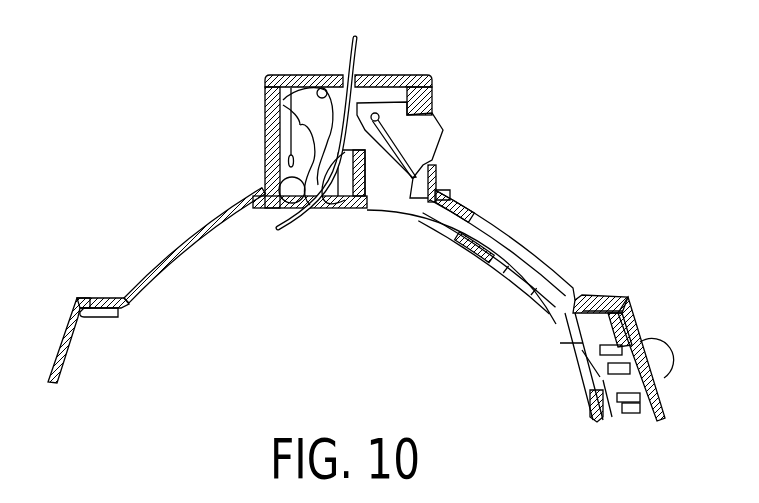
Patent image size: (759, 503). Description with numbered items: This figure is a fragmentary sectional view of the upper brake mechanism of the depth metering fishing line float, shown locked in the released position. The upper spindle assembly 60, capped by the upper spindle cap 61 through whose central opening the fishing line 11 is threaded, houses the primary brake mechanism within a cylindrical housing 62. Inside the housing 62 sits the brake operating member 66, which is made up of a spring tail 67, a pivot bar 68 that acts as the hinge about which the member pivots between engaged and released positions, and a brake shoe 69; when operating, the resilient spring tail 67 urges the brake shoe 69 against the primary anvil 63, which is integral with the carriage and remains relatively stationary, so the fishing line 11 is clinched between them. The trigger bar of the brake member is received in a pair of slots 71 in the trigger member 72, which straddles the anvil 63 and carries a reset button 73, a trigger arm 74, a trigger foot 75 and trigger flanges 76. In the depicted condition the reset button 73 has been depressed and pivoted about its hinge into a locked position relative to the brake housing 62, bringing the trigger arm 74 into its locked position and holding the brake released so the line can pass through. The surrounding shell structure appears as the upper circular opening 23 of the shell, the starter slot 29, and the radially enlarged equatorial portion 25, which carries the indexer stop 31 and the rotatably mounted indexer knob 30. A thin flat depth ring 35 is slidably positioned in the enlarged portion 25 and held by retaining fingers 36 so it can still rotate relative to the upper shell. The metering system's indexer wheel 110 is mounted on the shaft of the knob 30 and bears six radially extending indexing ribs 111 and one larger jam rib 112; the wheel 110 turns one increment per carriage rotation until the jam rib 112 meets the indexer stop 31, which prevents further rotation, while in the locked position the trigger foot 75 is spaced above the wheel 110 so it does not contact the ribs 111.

The upper spindle assembly 60 is at (204, 82).
The cylindrical housing 62 is at (264, 84).
The fishing line 11 is at (346, 50).
The trigger member 72 is at (363, 76).
The upper spindle cap 61 is at (334, 106).
The reset button 73 is at (443, 130).
The slots 71 is at (282, 90).
The brake operating member 66 is at (300, 128).
The spring tail 67 is at (298, 140).
The pivot bar 68 is at (290, 190).
The upper circular opening 23 is at (270, 224).
The brake shoe 69 is at (320, 215).
The primary anvil 63 is at (365, 180).
The starter slot 29 is at (473, 212).
The trigger arm 74 is at (514, 259).
The depth ring 35 is at (112, 318).
The indexer stop 31 is at (641, 312).
The indexer wheel 110 is at (658, 340).
The indexer knob 30 is at (667, 362).
The equatorial portion 25 is at (62, 328).
The trigger foot 75 is at (583, 324).
The trigger flanges 76 is at (578, 355).
The indexing ribs 111 is at (605, 403).
The jam rib 112 is at (632, 413).
The retaining fingers 36 is at (90, 320).